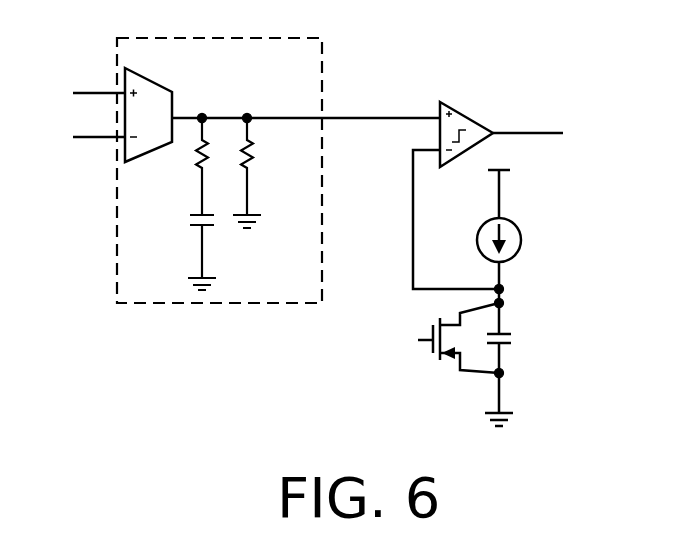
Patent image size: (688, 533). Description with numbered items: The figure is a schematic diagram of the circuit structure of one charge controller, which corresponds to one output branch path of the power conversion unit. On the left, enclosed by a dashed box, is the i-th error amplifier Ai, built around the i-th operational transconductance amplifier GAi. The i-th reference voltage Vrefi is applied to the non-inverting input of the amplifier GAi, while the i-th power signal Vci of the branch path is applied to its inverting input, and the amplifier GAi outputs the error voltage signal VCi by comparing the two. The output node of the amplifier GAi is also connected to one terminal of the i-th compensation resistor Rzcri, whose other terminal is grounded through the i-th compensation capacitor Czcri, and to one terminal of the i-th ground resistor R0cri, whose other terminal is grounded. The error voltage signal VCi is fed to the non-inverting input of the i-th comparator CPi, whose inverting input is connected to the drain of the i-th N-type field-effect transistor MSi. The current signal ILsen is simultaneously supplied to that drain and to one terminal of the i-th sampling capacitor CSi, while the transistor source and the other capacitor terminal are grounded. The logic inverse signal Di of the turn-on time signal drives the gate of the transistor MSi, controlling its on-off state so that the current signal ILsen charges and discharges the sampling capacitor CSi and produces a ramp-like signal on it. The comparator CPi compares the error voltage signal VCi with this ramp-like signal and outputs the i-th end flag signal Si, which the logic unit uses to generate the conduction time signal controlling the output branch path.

The i-th error amplifier Ai is at (219, 155).
The i-th operational transconductance amplifier GAi is at (154, 108).
The i-th reference voltage Vrefi is at (80, 77).
The i-th power signal Vci is at (90, 120).
The error voltage signal VCi is at (306, 106).
The i-th compensation resistor Rzcri is at (171, 166).
The i-th compensation capacitor Czcri is at (175, 252).
The i-th ground resistor R0cri is at (262, 173).
The i-th comparator CPi is at (466, 127).
The i-th end flag signal Si is at (543, 129).
The current signal ILsen is at (515, 239).
The i-th sampling capacitor CSi is at (512, 364).
The i-th N-type field-effect transistor MSi is at (466, 356).
The logic inverse signal of the i-th turn-on time signal Di is at (414, 325).